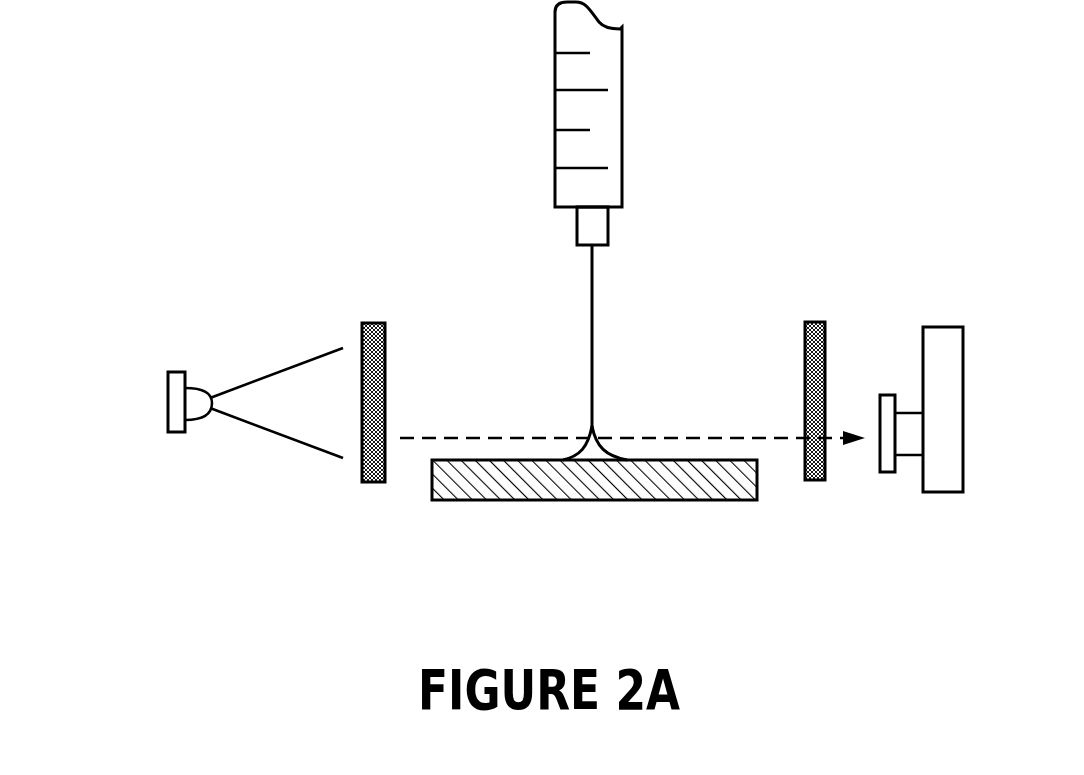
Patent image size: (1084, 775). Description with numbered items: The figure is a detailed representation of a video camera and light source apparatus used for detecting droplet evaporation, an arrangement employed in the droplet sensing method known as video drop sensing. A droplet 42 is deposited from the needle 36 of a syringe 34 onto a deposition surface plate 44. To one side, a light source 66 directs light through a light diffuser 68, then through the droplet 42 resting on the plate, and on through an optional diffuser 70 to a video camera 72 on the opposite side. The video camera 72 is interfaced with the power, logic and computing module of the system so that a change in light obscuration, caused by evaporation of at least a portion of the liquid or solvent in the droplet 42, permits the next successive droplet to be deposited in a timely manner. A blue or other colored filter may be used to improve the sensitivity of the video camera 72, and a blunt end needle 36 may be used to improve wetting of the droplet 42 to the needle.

The syringe 34 is at (553, 108).
The needle 36 is at (590, 331).
The droplet 42 is at (590, 421).
The deposition surface plate 44 is at (517, 458).
The light source 66 is at (174, 368).
The light diffuser 68 is at (372, 320).
The optional diffuser 70 is at (814, 318).
The video camera 72 is at (919, 343).